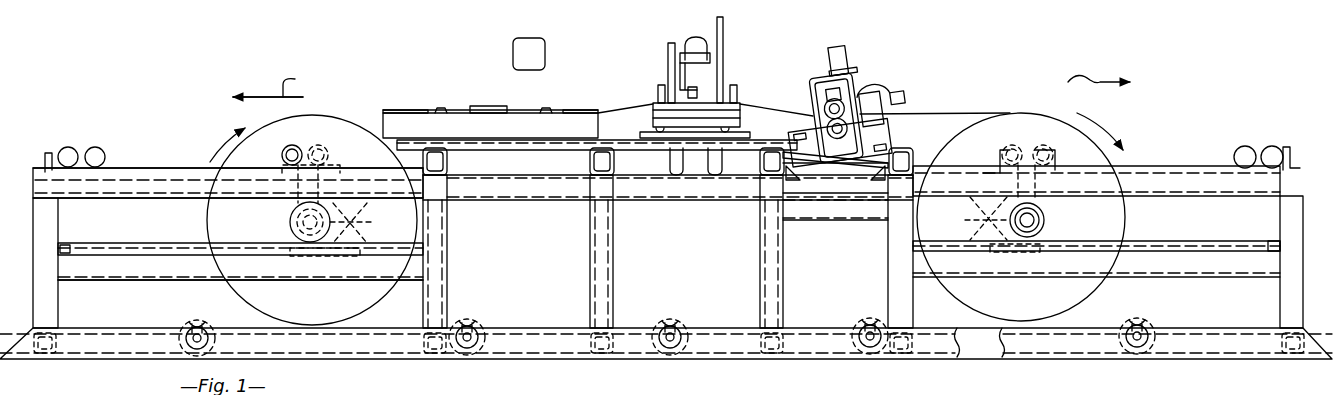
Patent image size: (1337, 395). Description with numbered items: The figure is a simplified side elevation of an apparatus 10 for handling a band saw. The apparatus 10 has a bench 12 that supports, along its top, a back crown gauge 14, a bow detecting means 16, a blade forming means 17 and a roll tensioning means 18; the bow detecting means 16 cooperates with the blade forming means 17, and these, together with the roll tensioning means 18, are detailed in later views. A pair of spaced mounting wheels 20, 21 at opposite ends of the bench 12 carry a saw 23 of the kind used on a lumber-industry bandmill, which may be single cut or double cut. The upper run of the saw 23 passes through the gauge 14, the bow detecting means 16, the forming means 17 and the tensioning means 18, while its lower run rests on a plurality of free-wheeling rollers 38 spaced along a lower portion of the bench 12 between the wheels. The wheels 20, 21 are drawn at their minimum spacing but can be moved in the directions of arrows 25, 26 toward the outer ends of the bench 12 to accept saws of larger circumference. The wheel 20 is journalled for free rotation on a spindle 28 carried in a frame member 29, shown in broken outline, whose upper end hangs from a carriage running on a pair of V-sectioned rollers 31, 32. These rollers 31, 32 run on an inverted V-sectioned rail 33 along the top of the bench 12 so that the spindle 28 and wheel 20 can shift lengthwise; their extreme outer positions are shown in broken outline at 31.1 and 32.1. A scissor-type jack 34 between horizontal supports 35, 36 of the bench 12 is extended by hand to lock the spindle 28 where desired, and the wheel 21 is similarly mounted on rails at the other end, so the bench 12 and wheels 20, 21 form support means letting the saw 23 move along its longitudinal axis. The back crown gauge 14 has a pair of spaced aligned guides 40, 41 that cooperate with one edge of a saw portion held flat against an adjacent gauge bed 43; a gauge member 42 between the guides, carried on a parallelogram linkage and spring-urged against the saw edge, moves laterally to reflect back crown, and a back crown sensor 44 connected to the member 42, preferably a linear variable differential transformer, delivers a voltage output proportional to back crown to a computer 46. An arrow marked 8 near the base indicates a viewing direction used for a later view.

The section line 8 is at (886, 390).
The apparatus 10 is at (1224, 140).
The bench 12 is at (548, 201).
The back crown gauge 14 is at (497, 103).
The bow detecting means 16 is at (701, 80).
The blade forming means 17 is at (746, 118).
The roll tensioning means 18 is at (868, 72).
The mounting wheel 20 is at (222, 296).
The mounting wheel 21 is at (1095, 289).
The saw 23 is at (577, 290).
The arrow 25 is at (278, 84).
The arrow 26 is at (1081, 83).
The spindle 28 is at (290, 225).
The frame member 29 is at (297, 196).
The V-sectioned roller 31 is at (282, 153).
The V-sectioned roller 32 is at (330, 152).
The extreme outer position of roller 31 31.1 is at (66, 148).
The extreme outer position of roller 32 32.1 is at (108, 150).
The inverted V-sectioned rail 33 is at (178, 165).
The scissor-type jack 34 is at (368, 224).
The horizontal support 35 is at (95, 188).
The horizontal support 36 is at (120, 280).
The free-wheeling rollers 38 is at (180, 326).
The guide 40 is at (418, 104).
The guide 41 is at (575, 113).
The gauge member 42 is at (490, 118).
The gauge bed 43 is at (535, 112).
The back crown sensor 44 is at (484, 104).
The computer 46 is at (545, 58).